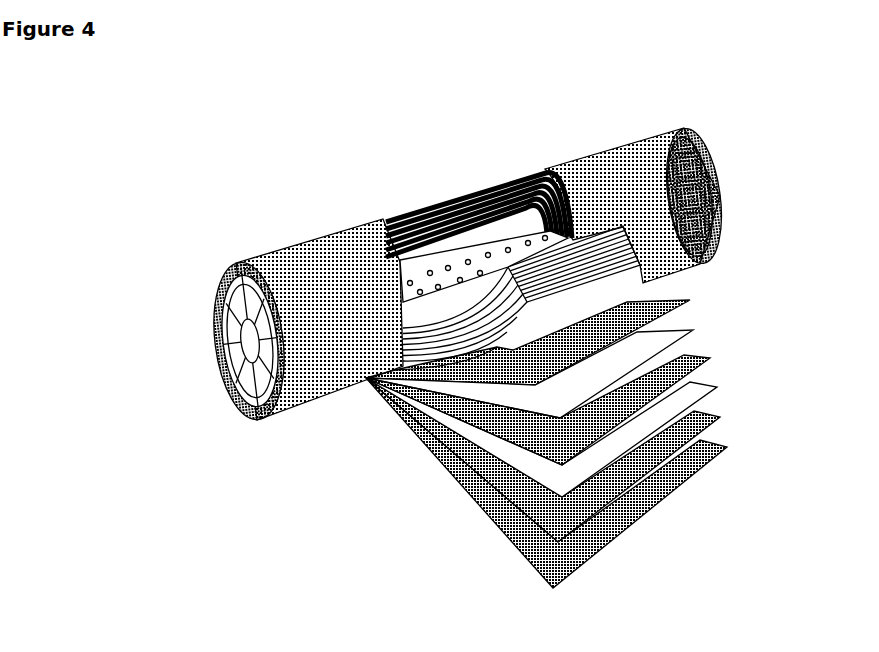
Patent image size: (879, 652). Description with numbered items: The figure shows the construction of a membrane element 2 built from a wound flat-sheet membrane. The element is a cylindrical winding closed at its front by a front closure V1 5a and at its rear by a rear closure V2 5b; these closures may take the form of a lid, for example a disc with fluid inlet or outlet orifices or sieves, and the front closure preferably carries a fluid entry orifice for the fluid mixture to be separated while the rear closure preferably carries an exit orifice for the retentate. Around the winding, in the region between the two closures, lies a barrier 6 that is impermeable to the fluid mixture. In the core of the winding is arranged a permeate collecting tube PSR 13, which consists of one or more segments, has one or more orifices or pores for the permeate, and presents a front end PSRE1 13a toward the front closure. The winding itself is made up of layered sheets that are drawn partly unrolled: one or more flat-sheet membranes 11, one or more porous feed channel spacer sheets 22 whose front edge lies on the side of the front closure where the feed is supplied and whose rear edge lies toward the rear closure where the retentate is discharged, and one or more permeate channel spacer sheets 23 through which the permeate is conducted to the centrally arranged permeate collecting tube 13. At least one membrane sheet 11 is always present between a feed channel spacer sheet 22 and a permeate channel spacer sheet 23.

The membrane element 2 is at (220, 196).
The front closure V1 5a is at (240, 398).
The rear closure V2 5b is at (721, 211).
The barrier 6 is at (628, 180).
The flat-sheet membrane 11 is at (693, 333).
The permeate collecting tube PSR 13 is at (480, 253).
The front end PSRE1 of the permeate collecting tube 13a is at (246, 345).
The porous feed channel spacer sheet 22 is at (690, 300).
The permeate channel spacer sheet 23 is at (458, 416).